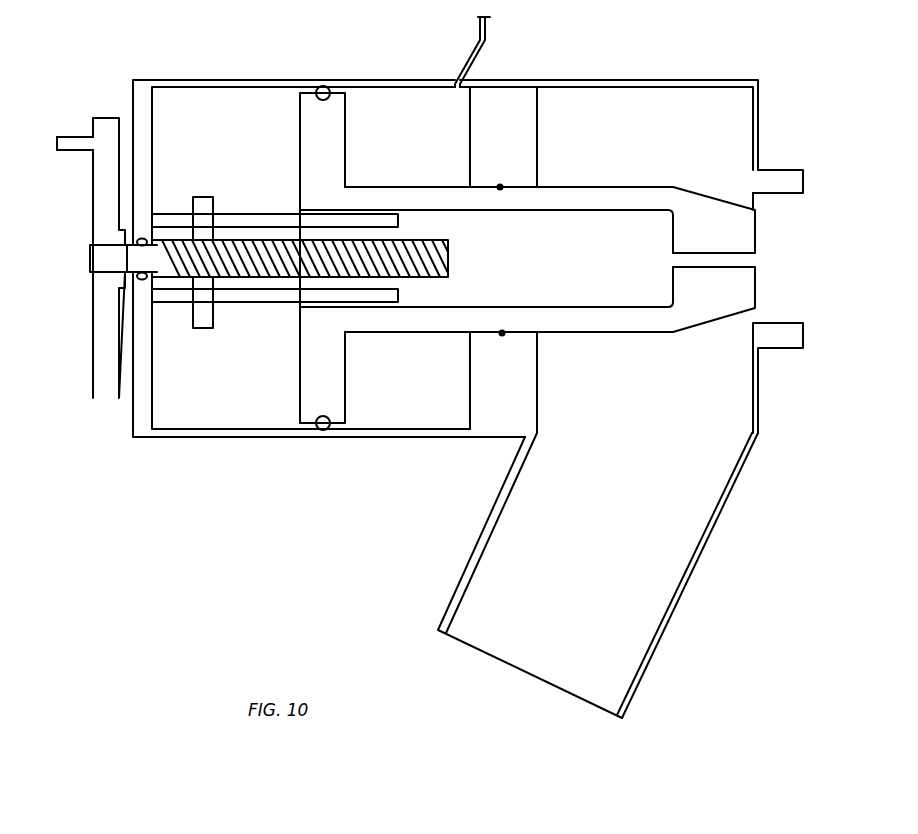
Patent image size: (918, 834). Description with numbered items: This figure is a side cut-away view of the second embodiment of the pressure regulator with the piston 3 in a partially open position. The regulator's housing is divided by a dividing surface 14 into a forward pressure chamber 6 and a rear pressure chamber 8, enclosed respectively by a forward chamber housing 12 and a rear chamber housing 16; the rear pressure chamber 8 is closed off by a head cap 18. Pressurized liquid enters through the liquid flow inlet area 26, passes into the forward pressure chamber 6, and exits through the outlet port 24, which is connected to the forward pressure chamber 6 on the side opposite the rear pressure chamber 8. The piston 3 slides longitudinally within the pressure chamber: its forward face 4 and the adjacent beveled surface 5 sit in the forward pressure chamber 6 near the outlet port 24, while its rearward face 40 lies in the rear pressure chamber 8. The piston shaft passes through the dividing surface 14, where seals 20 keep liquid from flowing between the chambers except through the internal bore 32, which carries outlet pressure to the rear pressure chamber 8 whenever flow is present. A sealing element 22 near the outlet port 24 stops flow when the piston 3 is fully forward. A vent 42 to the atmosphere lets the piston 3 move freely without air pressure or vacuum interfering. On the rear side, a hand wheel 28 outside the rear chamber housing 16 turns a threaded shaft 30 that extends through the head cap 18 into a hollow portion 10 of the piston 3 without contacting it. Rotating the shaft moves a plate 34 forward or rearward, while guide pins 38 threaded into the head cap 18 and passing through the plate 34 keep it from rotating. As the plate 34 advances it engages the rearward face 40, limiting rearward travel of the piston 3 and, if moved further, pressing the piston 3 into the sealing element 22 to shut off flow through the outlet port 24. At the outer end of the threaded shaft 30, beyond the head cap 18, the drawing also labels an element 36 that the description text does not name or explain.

The piston 3 is at (322, 254).
The forward face 4 is at (770, 228).
The beveled surface 5 is at (720, 195).
The forward pressure chamber 6 is at (639, 134).
The rear pressure chamber 8 is at (199, 366).
The hollow portion 10 is at (486, 258).
The forward chamber housing 12 is at (690, 590).
The dividing surface 14 is at (503, 382).
The rear chamber housing 16 is at (397, 437).
The head cap 18 is at (133, 425).
The seals 20 is at (500, 187).
The sealing element 22 is at (757, 190).
The outlet port 24 is at (756, 323).
The liquid flow inlet area 26 is at (565, 606).
The hand wheel 28 is at (110, 188).
The threaded shaft 30 is at (440, 262).
The internal bore 32 is at (770, 262).
The plate 34 is at (207, 197).
The bolt head 36 is at (112, 275).
The guide pins 38 is at (229, 303).
The rearward face 40 is at (292, 364).
The vent 42 is at (478, 38).